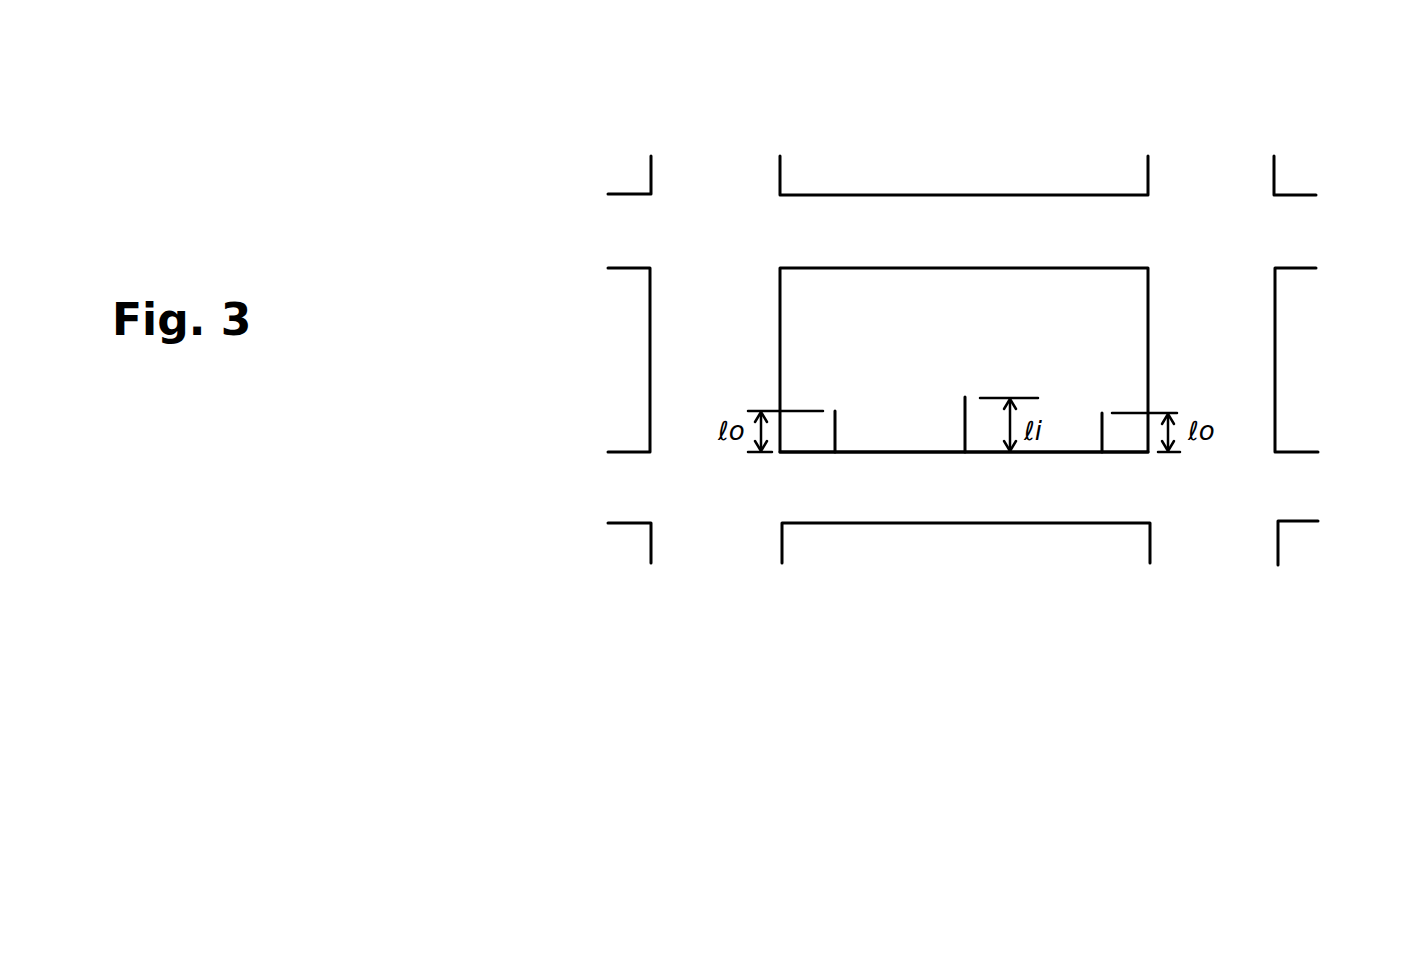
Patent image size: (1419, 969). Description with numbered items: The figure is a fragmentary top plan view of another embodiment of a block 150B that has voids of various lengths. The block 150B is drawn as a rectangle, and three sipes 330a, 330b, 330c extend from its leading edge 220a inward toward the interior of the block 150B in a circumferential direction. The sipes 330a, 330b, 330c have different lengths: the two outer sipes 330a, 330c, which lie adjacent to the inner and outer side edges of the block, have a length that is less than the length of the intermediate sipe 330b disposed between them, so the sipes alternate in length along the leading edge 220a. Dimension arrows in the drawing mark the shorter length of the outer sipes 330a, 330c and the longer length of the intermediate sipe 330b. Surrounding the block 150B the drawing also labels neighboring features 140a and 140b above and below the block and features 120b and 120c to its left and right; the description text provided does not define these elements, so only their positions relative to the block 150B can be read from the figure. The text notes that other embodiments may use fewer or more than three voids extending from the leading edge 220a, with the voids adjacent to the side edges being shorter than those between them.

The block 150B is at (1145, 252).
The gate line 140a is at (1002, 252).
The gate line 140b is at (1002, 508).
The data line 120b is at (736, 381).
The data line 120c is at (1252, 366).
The leading edge 220a is at (875, 453).
The outer sipe 330a is at (837, 428).
The intermediate sipe 330b is at (962, 425).
The outer sipe 330c is at (1097, 430).